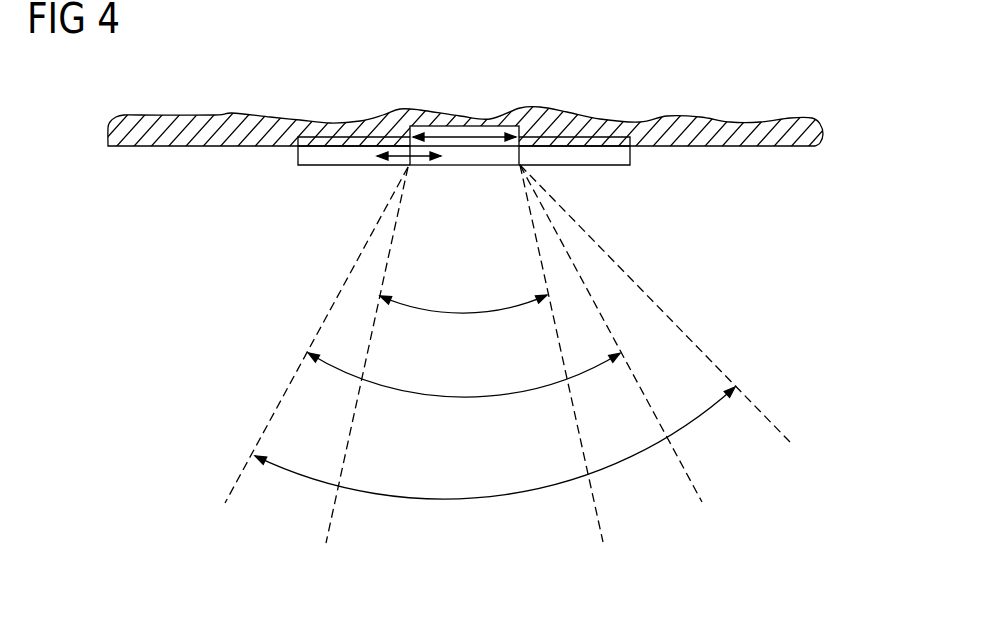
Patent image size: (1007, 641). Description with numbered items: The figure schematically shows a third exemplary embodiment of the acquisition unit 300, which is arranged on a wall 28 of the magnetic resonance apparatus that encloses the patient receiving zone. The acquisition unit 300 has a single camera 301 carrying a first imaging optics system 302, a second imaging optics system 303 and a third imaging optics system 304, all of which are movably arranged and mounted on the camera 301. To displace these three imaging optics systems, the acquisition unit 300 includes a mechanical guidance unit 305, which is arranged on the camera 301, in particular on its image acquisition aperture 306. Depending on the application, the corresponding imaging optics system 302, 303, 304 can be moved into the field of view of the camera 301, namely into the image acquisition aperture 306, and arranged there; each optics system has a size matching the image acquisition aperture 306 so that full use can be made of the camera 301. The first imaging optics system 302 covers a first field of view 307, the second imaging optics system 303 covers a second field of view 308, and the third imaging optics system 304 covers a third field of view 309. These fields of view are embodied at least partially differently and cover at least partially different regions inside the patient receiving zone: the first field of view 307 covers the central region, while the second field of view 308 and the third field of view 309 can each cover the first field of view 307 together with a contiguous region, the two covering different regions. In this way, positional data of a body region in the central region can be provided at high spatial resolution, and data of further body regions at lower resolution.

The wall 28 is at (677, 130).
The acquisition unit 300 is at (460, 112).
The camera 301 is at (490, 130).
The first imaging optics system 302 is at (458, 167).
The second imaging optics system 303 is at (347, 168).
The third imaging optics system 304 is at (600, 167).
The guidance unit 305 is at (577, 140).
The image acquisition aperture 306 is at (425, 127).
The first field of view 307 is at (462, 316).
The second field of view 308 is at (462, 399).
The third field of view 309 is at (462, 502).